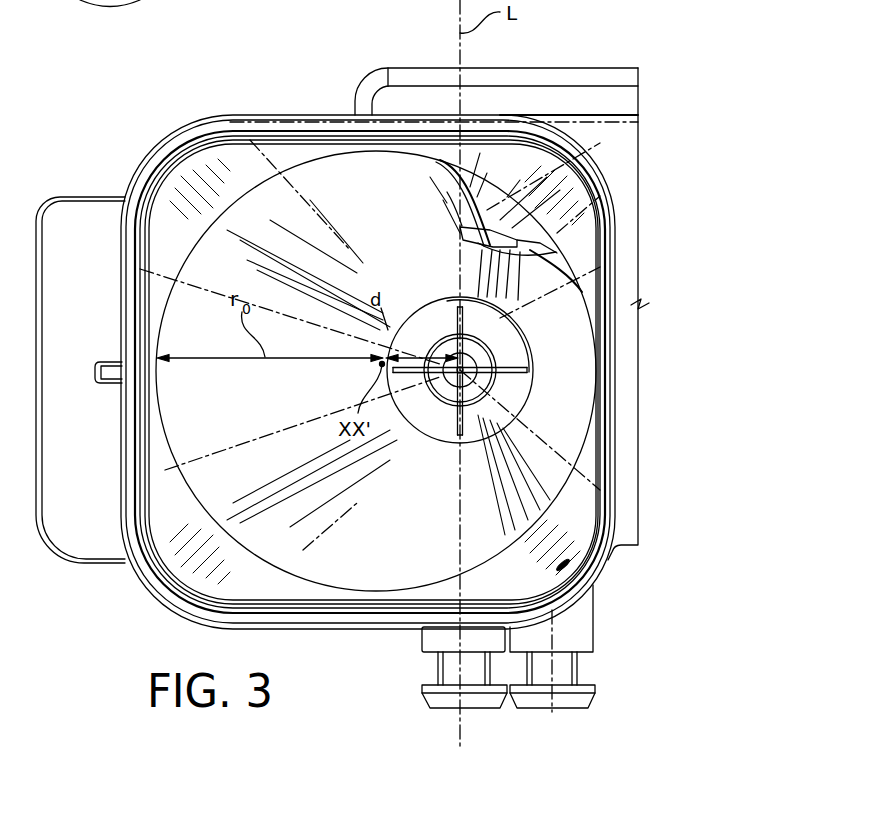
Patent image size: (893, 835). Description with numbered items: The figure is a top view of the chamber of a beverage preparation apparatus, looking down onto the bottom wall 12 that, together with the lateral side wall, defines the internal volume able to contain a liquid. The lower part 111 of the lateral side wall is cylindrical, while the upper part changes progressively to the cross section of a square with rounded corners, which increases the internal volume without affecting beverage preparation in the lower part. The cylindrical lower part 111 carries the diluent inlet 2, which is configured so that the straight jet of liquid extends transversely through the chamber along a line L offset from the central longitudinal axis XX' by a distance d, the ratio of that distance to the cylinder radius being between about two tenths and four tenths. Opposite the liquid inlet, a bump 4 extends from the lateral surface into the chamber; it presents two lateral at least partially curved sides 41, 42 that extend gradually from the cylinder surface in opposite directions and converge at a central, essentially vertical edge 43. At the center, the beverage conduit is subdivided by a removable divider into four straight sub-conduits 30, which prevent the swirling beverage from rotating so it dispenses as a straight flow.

The diluent inlet 2 is at (477, 708).
The bump 4 is at (497, 224).
The bottom wall 12 is at (562, 435).
The straight sub-conduits 30 is at (413, 350).
The first lateral curved side of the bump 41 is at (447, 192).
The second lateral curved side of the bump 42 is at (533, 258).
The central vertical edge 43 is at (478, 243).
The lower part of the lateral side wall 111 is at (200, 265).